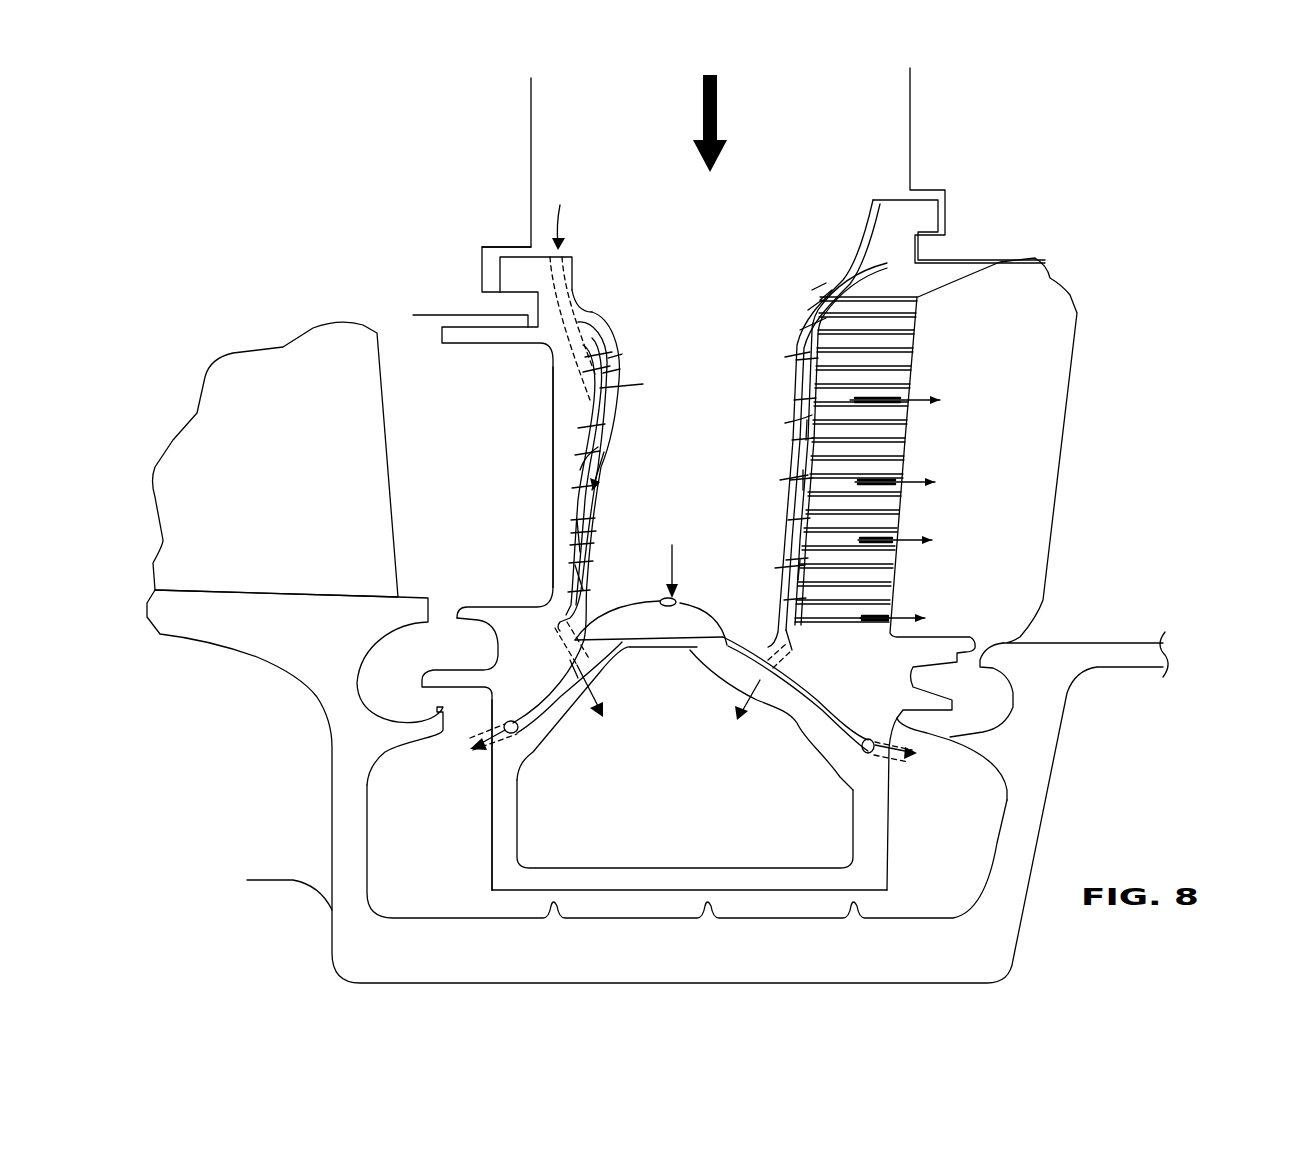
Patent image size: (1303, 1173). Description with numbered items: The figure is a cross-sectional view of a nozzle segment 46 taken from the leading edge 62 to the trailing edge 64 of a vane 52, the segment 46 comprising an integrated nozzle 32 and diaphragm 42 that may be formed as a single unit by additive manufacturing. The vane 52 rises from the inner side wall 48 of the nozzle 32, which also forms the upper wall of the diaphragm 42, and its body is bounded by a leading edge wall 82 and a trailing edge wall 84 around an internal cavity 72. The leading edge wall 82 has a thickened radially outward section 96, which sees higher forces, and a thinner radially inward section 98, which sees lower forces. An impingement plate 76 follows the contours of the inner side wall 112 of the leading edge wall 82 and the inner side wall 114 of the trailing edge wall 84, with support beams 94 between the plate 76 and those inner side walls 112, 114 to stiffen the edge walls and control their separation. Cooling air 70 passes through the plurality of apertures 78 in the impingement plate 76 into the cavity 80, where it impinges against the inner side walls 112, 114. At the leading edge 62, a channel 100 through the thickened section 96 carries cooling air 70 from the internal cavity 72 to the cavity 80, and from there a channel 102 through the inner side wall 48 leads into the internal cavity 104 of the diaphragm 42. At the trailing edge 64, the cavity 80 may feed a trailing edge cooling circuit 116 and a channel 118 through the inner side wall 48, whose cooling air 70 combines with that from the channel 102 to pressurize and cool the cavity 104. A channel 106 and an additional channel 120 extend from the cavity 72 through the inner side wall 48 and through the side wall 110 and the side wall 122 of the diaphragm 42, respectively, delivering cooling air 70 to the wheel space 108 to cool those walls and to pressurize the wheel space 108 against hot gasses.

The nozzle 32 is at (470, 195).
The diaphragm 42 is at (465, 810).
The nozzle segment 46 is at (335, 110).
The inner side wall 48 is at (670, 650).
The vane 52 is at (510, 100).
The leading edge 62 is at (535, 445).
The trailing edge 64 is at (935, 452).
The cooling air 70 is at (698, 116).
The internal cavity 72 is at (672, 413).
The impingement plate 76 is at (615, 325).
The apertures 78 is at (620, 348).
The cavity 80 is at (590, 350).
The leading edge wall 82 is at (550, 505).
The trailing edge wall 84 is at (805, 515).
The support beams 94 is at (572, 538).
The radially outward section 96 is at (600, 295).
The radially inward section 98 is at (535, 580).
The channel 100 is at (540, 275).
The channel 102 is at (560, 648).
The internal cavity 104 is at (656, 833).
The channel 106 is at (565, 715).
The wheel space 108 is at (452, 885).
The side wall 110 is at (490, 782).
The inner side wall 112 is at (597, 505).
The inner side wall 114 is at (800, 478).
The trailing edge cooling circuit 116 is at (910, 360).
The channel 118 is at (795, 660).
The channel 120 is at (797, 740).
The side wall 122 is at (890, 800).